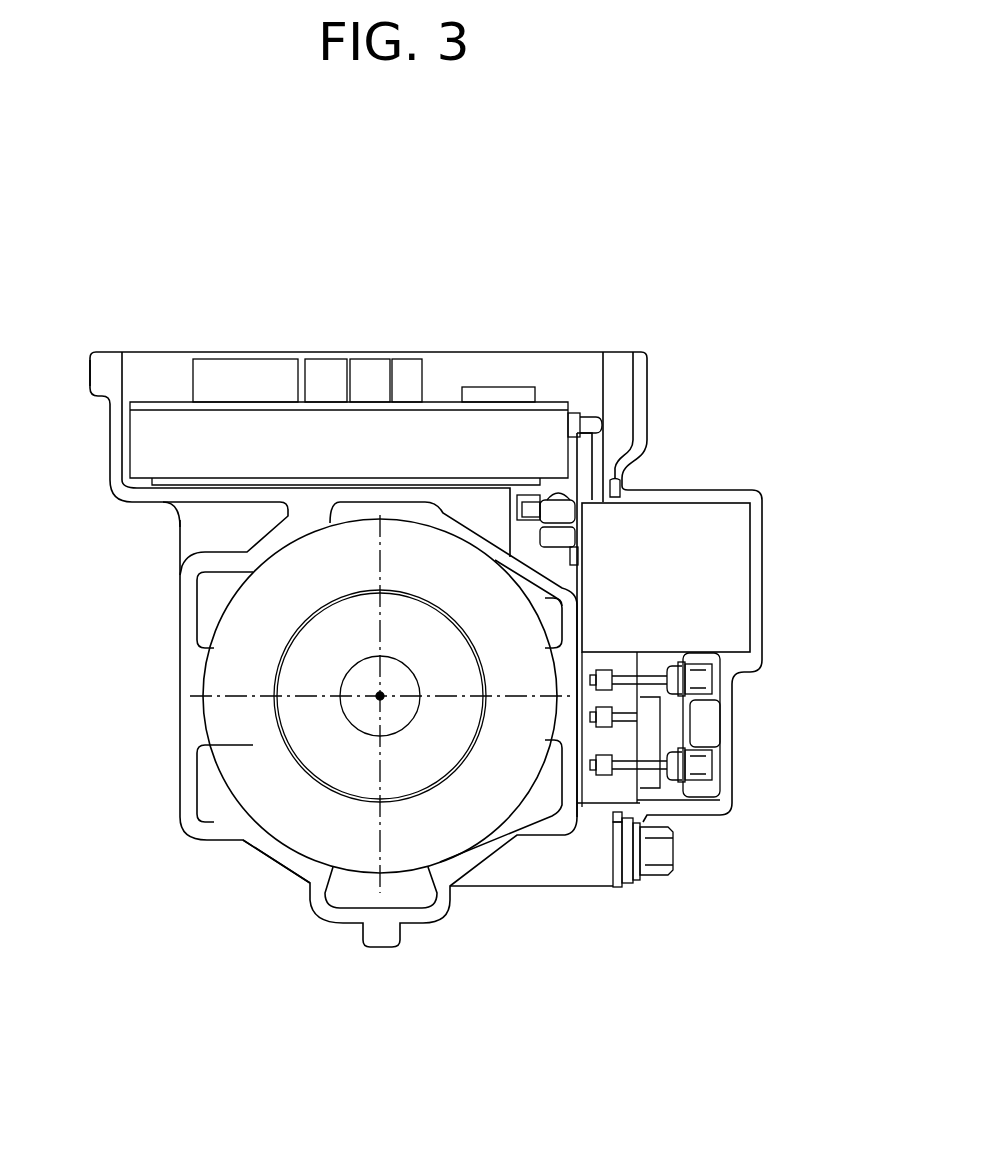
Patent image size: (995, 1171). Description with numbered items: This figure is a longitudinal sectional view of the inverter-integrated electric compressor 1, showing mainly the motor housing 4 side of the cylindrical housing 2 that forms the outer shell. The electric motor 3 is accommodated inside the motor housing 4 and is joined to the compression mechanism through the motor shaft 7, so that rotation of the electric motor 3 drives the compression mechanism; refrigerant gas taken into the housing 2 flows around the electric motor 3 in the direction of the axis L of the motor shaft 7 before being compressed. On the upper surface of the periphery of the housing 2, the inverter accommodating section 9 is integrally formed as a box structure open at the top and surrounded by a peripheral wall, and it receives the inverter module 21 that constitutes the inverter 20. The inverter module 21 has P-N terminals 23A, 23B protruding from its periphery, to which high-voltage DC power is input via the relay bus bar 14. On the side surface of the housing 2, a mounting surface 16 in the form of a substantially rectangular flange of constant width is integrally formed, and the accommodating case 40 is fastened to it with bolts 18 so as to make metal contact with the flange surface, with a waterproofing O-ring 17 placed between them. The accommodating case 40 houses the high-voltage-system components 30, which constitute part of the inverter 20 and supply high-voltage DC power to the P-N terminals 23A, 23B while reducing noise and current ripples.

The inverter-integrated electric compressor 1 is at (675, 223).
The cylindrical housing 2 is at (187, 527).
The electric motor 3 is at (238, 730).
The motor housing 4 is at (283, 848).
The motor shaft 7 is at (353, 707).
The inverter accommodating section 9 is at (117, 421).
The relay bus bar 14 is at (583, 467).
The mounting surface 16 is at (617, 823).
The waterproofing O-ring 17 is at (622, 818).
The bolts 18 is at (662, 853).
The inverter 20 is at (437, 385).
The inverter module 21 is at (255, 430).
The P-N terminal 23A is at (602, 425).
The P-N terminal 23B is at (591, 425).
The high-voltage-system components 30 is at (717, 612).
The accommodating case 40 is at (755, 525).
The axis L is at (382, 692).